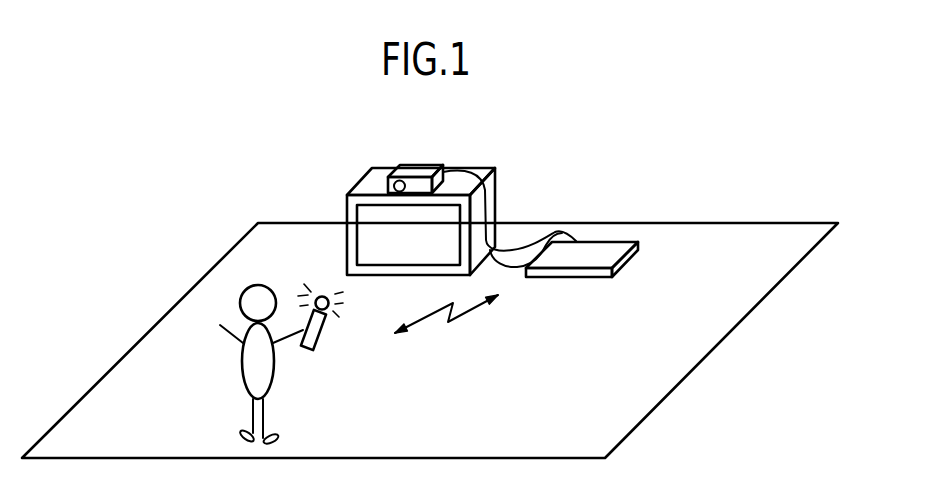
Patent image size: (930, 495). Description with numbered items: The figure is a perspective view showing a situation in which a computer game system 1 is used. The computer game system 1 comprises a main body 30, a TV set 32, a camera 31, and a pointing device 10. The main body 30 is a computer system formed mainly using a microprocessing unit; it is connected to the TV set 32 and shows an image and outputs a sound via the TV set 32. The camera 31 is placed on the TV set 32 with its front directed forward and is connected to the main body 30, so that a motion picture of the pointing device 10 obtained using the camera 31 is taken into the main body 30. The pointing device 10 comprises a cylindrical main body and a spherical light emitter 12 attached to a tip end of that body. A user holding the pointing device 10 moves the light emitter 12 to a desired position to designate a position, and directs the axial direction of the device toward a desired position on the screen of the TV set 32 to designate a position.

The computer game system 1 is at (657, 209).
The pointing device 10 is at (323, 338).
The light emitter 12 is at (322, 296).
The main body 30 is at (587, 278).
The camera 31 is at (420, 165).
The TV set 32 is at (346, 196).